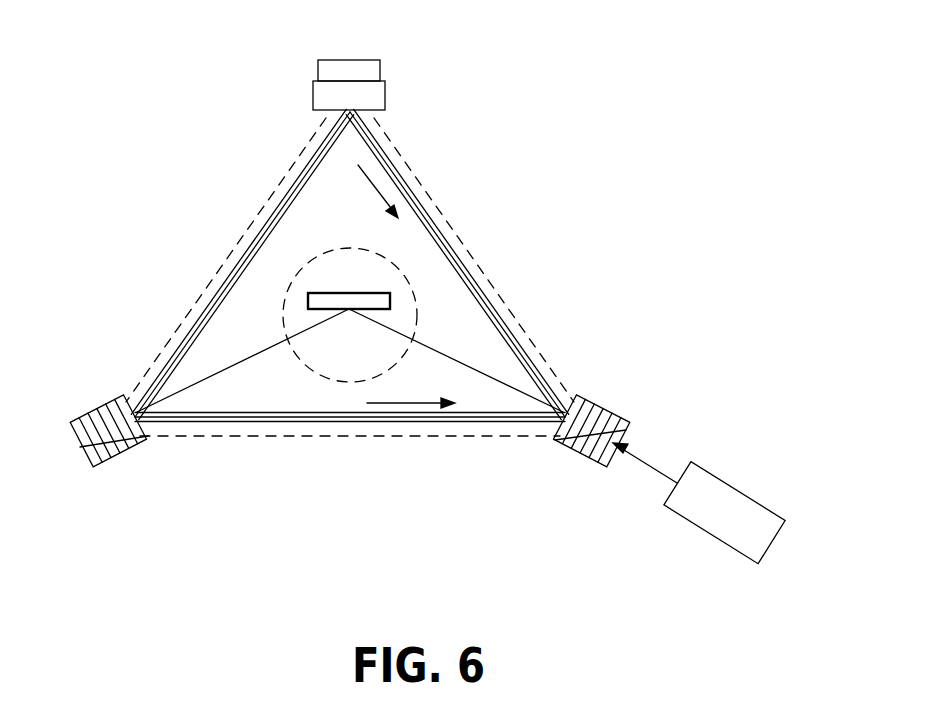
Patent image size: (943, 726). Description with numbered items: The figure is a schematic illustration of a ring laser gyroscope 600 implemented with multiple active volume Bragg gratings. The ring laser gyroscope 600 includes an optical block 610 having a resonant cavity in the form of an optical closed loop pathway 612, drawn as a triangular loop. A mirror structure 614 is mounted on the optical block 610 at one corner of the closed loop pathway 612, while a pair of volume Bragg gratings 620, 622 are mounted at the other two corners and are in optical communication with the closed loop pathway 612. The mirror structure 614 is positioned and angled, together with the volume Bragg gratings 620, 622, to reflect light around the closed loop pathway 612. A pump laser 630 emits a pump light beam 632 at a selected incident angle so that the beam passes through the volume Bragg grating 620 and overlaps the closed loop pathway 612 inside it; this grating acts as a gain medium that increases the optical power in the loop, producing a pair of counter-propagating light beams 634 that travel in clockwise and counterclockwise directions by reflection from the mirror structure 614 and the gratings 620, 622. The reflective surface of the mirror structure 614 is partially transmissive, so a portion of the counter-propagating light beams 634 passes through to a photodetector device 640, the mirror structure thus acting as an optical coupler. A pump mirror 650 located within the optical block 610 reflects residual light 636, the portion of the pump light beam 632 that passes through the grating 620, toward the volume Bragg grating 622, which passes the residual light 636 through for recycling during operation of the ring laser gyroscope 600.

The ring laser gyroscope 600 is at (508, 104).
The optical block 610 is at (472, 257).
The optical closed loop pathway 612 is at (298, 412).
The mirror structure 614 is at (313, 92).
The volume Bragg grating 620 is at (597, 400).
The volume Bragg grating 622 is at (88, 451).
The pump laser 630 is at (690, 528).
The pump light beam 632 is at (660, 472).
The counter-propagating light beams 634 is at (226, 277).
The residual light 636 is at (235, 367).
The photodetector device 640 is at (343, 59).
The pump mirror 650 is at (358, 292).